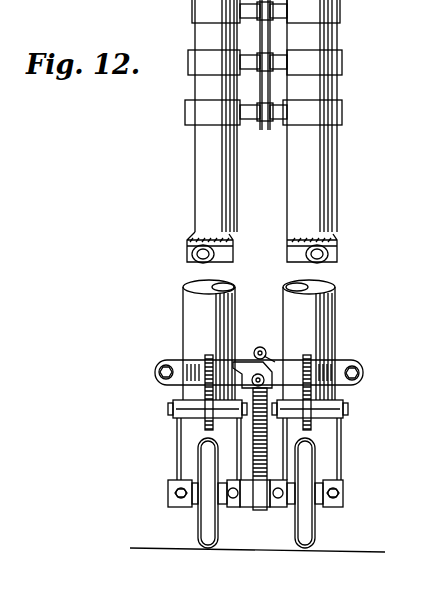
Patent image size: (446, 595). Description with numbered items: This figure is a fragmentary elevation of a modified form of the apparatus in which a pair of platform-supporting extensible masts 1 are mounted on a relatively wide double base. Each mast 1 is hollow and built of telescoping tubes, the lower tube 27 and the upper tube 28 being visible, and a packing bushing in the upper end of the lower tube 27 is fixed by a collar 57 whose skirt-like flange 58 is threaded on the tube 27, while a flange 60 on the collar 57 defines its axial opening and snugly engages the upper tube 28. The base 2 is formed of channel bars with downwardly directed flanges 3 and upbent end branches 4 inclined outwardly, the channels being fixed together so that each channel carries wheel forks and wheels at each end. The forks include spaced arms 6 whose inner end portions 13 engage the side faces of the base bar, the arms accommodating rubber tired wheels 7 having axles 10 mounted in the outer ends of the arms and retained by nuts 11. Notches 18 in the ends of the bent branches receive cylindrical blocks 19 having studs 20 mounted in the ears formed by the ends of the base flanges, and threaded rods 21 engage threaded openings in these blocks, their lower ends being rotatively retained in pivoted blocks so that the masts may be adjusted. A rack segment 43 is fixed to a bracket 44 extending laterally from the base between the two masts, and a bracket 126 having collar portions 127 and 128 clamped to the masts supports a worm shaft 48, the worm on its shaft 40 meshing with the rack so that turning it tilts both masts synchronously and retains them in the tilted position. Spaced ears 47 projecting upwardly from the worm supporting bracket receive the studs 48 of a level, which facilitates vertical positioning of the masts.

The extensible platform-supporting mast 1 is at (333, 218).
The base 2 is at (177, 440).
The downwardly directed flanges 3 is at (343, 431).
The upbent end branches 4 is at (334, 453).
The arms 6 is at (186, 506).
The rubber tired wheels 7 is at (211, 535).
The axles 10 is at (168, 493).
The nuts 11 is at (343, 497).
The inner end portions 13 is at (343, 486).
The notches 18 is at (180, 406).
The cylindrical blocks 19 is at (335, 410).
The studs 20 is at (345, 412).
The threaded rods 21 is at (330, 398).
The lower mast tube 27 is at (331, 90).
The upper mast tube 28 is at (320, 37).
The shaft 40 is at (224, 348).
The rack segment 43 is at (246, 362).
The bracket 44 is at (262, 505).
The spaced ears 47 is at (272, 353).
The studs 48 is at (262, 347).
The collar 57 is at (205, 8).
The skirt-like flange 58 is at (192, 119).
The flange 60 is at (185, 100).
The bracket 126 is at (290, 366).
The collar portion 127 is at (320, 371).
The collar portion 128 is at (194, 370).